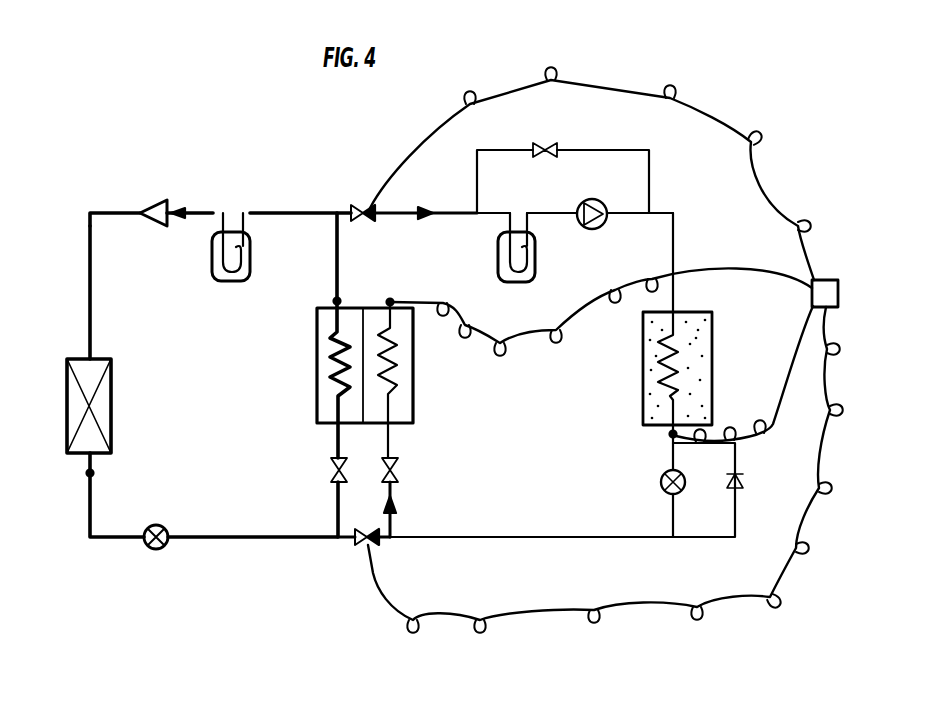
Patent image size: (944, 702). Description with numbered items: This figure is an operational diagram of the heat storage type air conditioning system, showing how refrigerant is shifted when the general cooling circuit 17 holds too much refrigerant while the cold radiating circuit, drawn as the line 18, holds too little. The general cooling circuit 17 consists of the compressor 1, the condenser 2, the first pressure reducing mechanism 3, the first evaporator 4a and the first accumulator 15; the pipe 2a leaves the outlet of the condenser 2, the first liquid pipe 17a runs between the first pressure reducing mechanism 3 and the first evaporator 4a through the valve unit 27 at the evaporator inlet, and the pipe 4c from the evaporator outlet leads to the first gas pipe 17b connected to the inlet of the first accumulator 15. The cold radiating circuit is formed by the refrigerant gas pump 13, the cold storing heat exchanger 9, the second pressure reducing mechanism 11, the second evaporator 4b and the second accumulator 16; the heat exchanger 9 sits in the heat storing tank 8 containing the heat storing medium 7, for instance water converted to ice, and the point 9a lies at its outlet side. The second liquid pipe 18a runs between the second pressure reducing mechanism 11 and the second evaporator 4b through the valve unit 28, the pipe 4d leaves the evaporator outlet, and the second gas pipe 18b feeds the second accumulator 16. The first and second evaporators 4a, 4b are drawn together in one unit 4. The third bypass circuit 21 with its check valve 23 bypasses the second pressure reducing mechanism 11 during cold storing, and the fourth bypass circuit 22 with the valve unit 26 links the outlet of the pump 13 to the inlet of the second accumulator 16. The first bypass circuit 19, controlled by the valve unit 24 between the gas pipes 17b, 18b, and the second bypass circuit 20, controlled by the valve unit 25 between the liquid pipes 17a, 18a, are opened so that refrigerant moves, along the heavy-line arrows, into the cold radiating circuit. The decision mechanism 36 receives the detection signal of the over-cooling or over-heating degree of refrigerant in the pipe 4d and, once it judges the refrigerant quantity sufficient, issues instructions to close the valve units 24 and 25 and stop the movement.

The compressor 1 is at (150, 206).
The condenser 2 is at (111, 405).
The pipe connected to the outlet of the condenser 2a is at (94, 474).
The first pressure reducing mechanism 3 is at (164, 526).
The heat exchanger 4 is at (316, 332).
The first evaporator 4a is at (328, 394).
The second evaporator 4b is at (400, 383).
The pipe connected to the outlet of the first evaporator 4c is at (334, 300).
The pipe connected to the outlet of the heat exchanger 4d is at (392, 300).
The heat storing medium 7 is at (712, 332).
The heat storing tank 8 is at (712, 390).
The cold storing heat exchanger 9 is at (662, 352).
The junction 9a is at (672, 434).
The second pressure reducing mechanism 11 is at (661, 479).
The refrigerant gas pump 13 is at (604, 226).
The first accumulator 15 is at (214, 279).
The second accumulator 16 is at (537, 272).
The general cooling circuit 17 is at (222, 539).
The first liquid pipe 17a is at (256, 535).
The first gas pipe 17b is at (301, 214).
The heat carrier line 18 is at (496, 539).
The second liquid pipe 18a is at (463, 535).
The second gas pipe 18b is at (456, 215).
The first bypass circuit 19 is at (406, 212).
The second bypass circuit 20 is at (386, 540).
The third bypass circuit 21 is at (735, 516).
The fourth bypass circuit 22 is at (649, 192).
The check valve 23 is at (745, 480).
The valve unit 24 is at (360, 206).
The valve unit 25 is at (364, 541).
The valve unit 26 is at (546, 143).
The valve unit 27 is at (330, 470).
The valve unit 28 is at (398, 472).
The decision mechanism 36 is at (832, 281).